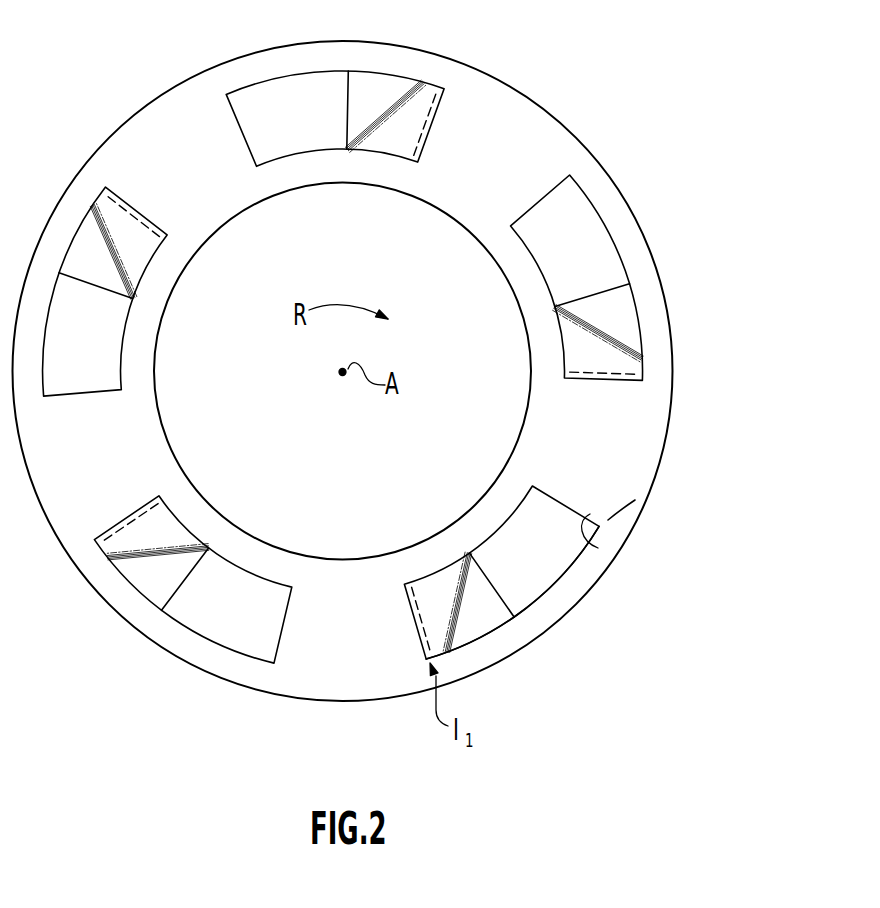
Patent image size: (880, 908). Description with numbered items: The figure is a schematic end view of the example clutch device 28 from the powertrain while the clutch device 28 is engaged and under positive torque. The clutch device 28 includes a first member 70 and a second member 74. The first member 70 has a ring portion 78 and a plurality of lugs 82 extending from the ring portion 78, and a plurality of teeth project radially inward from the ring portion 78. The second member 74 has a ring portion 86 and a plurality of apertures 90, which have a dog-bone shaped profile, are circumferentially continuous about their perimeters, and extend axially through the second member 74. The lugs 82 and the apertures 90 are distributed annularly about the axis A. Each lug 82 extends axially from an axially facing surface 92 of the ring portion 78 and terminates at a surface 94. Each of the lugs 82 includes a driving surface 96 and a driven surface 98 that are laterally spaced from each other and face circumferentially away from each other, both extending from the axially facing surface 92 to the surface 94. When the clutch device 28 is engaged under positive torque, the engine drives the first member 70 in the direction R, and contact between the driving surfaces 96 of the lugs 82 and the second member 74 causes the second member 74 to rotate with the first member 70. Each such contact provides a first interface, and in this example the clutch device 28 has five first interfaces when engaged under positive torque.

The clutch device 28 is at (384, 362).
The first member 70 is at (621, 334).
The second member 74 is at (637, 445).
The ring portion 78 is at (533, 565).
The lugs 82 is at (443, 635).
The ring portion 86 is at (620, 508).
The apertures 90 is at (598, 548).
The axially facing surface 92 is at (523, 583).
The surface 94 is at (487, 618).
The driving surface 96 is at (405, 605).
The driven surface 98 is at (490, 567).